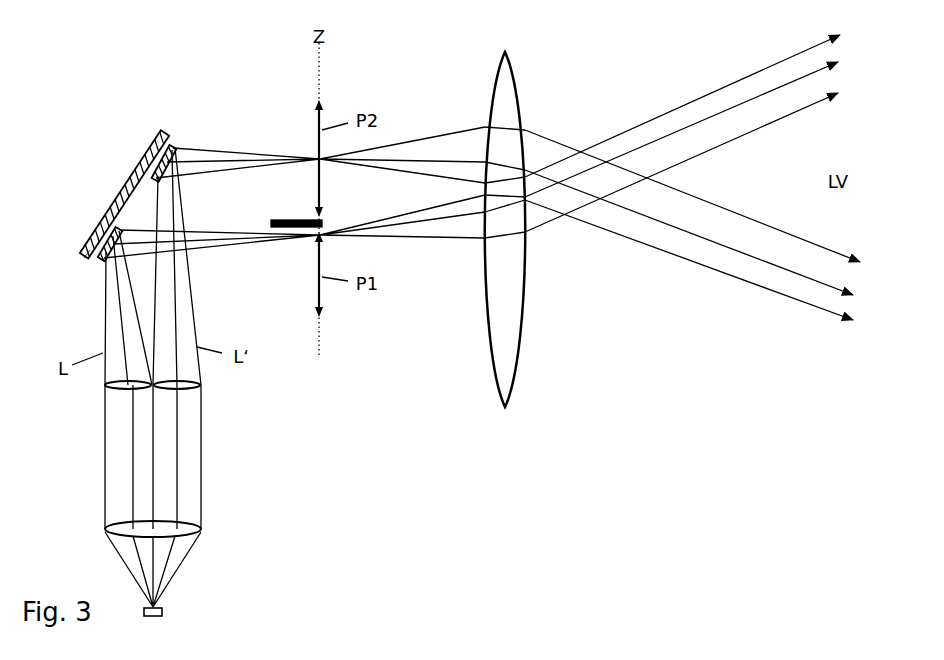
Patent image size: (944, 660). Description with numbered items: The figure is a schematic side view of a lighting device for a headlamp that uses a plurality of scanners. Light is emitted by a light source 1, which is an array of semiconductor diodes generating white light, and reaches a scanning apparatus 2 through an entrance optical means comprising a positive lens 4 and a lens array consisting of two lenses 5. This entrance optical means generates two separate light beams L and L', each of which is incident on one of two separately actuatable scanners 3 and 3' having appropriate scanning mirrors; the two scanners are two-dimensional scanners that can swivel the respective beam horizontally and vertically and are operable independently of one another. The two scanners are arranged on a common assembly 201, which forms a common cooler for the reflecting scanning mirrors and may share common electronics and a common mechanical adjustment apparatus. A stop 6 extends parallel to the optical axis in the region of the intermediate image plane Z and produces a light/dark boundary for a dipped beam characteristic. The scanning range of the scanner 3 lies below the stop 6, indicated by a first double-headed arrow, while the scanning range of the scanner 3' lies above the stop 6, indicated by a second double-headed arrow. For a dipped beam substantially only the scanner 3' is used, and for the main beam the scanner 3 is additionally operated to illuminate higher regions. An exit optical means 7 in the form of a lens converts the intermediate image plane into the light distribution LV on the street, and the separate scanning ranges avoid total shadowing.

The light source 1 is at (163, 611).
The scanning apparatus 2 is at (152, 95).
The common assembly 201 is at (84, 257).
The scanner 3 is at (99, 273).
The scanner 3' is at (186, 144).
The positive lens 4 is at (202, 528).
The lenses 5 is at (105, 385).
The stop 6 is at (297, 219).
The exit optical means 7 is at (515, 65).